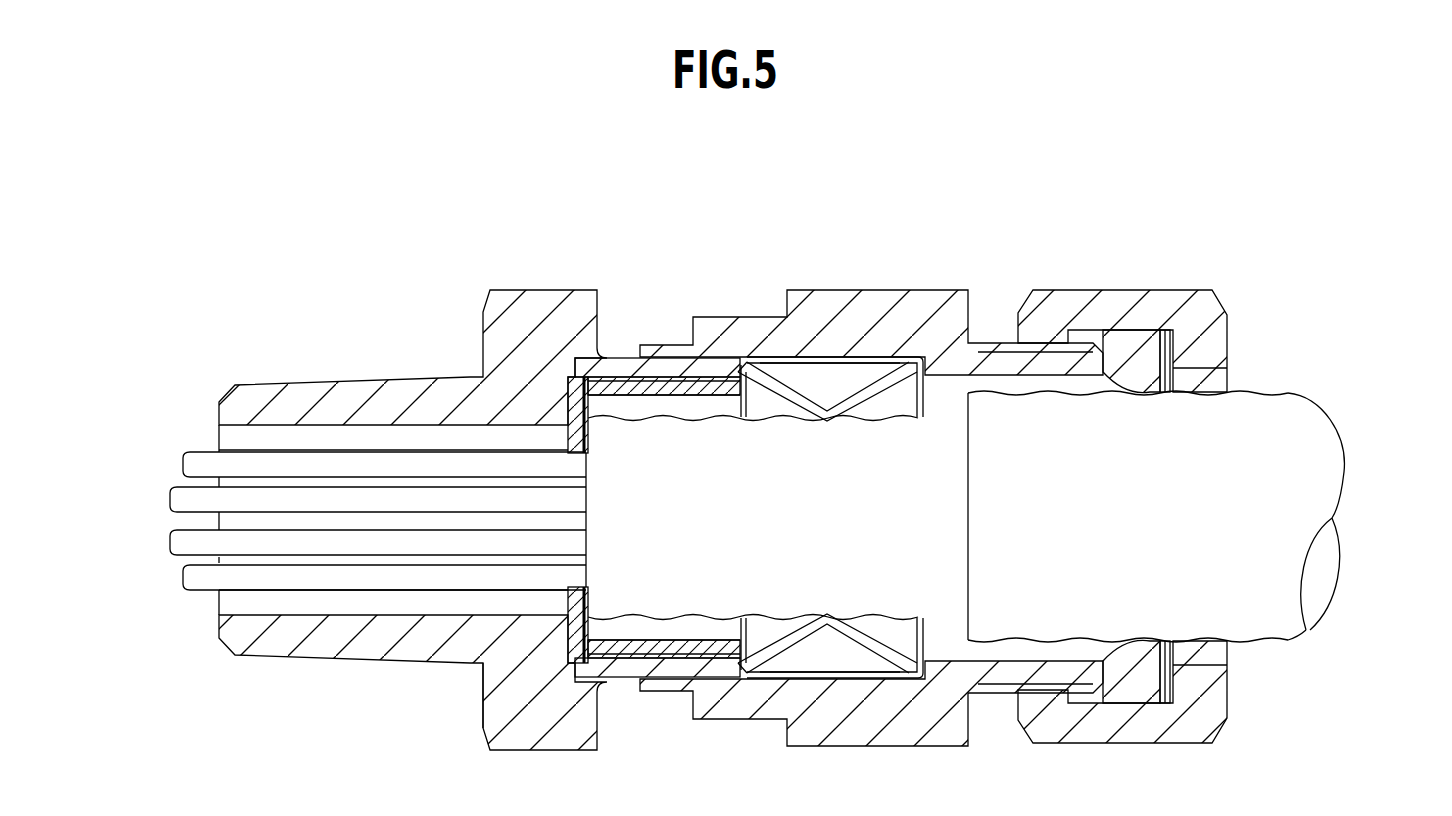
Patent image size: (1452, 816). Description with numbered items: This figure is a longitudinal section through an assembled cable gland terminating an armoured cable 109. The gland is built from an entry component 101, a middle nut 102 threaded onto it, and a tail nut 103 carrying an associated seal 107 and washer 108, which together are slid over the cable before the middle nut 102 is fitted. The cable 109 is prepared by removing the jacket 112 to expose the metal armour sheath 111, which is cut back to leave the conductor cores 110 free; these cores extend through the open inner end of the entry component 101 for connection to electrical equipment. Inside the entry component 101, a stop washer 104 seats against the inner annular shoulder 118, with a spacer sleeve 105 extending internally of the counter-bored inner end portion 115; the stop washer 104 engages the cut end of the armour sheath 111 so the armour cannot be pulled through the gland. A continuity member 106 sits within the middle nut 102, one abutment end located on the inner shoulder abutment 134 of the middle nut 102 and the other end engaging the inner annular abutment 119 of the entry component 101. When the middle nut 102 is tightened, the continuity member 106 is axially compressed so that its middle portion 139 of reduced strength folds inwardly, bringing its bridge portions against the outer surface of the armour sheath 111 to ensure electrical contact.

The entry component 101 is at (518, 280).
The middle nut 102 is at (897, 282).
The tail nut 103 is at (1157, 280).
The stop washer 104 is at (576, 378).
The spacer sleeve 105 is at (618, 386).
The continuity member 106 is at (790, 400).
The seal 107 is at (1147, 345).
The washer 108 is at (1172, 347).
The cable 109 is at (1352, 462).
The conductor cores 110 is at (198, 457).
The armour sheath 111 is at (674, 575).
The jacket 112 is at (1295, 438).
The inner end portion 115 is at (672, 360).
The inner annular shoulder 118 is at (485, 693).
The inner annular abutment 119 is at (737, 362).
The inner shoulder abutment 134 is at (925, 380).
The middle portion 139 is at (840, 380).